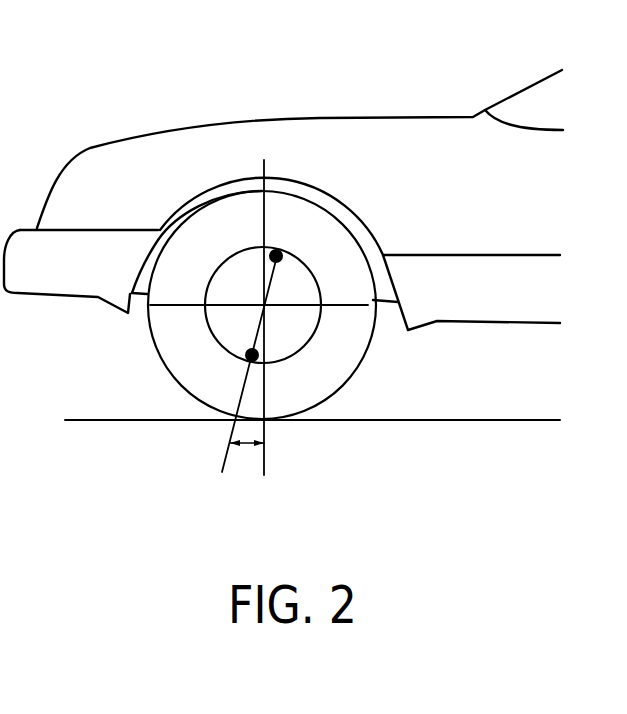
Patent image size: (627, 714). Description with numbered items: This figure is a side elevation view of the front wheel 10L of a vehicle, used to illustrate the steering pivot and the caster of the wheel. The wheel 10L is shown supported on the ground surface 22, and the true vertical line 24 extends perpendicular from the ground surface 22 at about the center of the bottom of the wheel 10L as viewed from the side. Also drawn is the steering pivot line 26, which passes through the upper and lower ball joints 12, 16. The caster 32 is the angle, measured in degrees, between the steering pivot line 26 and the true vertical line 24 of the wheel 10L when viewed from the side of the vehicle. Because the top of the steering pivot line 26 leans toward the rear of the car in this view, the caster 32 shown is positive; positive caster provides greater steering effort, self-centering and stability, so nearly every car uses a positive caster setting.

The front wheel 10L is at (172, 368).
The ball joint 12 is at (283, 248).
The ball joint 16 is at (270, 363).
The ground surface 22 is at (533, 421).
The true vertical line 24 is at (265, 458).
The steering pivot line 26 is at (227, 454).
The caster 32 is at (242, 450).